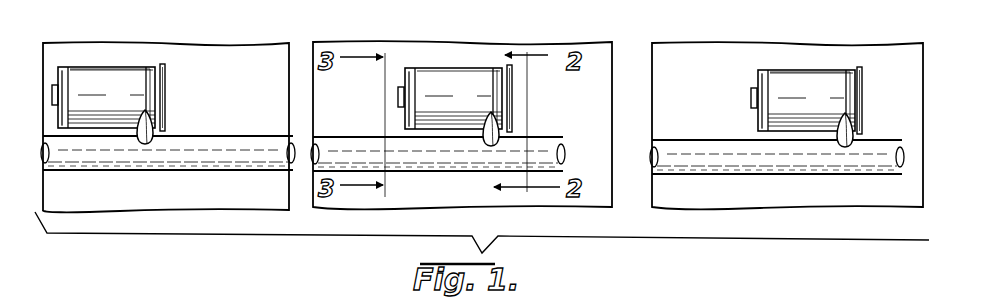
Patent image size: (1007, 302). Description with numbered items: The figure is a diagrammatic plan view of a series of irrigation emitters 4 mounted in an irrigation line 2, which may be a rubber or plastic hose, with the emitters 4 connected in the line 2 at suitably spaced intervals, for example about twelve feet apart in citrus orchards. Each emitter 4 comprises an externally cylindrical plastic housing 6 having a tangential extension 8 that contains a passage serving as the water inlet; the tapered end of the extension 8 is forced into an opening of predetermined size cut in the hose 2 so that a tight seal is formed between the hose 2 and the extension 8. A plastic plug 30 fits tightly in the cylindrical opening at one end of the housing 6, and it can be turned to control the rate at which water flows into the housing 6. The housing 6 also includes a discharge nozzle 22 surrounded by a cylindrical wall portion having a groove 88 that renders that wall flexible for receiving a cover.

The irrigation line 2 is at (200, 168).
The irrigation emitter 4 is at (145, 66).
The plastic housing 6 is at (128, 74).
The tangential extension 8 is at (137, 124).
The discharge nozzle 22 is at (58, 97).
The plastic plug 30 is at (168, 90).
The groove 88 is at (59, 69).